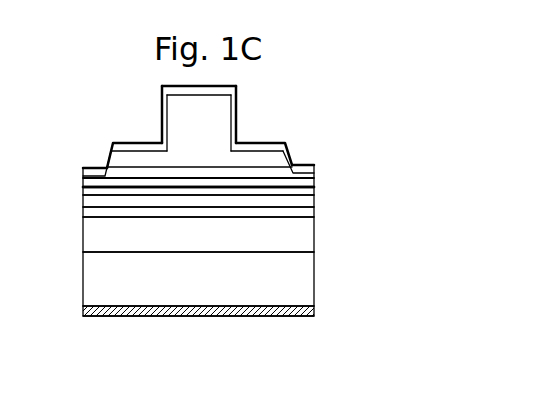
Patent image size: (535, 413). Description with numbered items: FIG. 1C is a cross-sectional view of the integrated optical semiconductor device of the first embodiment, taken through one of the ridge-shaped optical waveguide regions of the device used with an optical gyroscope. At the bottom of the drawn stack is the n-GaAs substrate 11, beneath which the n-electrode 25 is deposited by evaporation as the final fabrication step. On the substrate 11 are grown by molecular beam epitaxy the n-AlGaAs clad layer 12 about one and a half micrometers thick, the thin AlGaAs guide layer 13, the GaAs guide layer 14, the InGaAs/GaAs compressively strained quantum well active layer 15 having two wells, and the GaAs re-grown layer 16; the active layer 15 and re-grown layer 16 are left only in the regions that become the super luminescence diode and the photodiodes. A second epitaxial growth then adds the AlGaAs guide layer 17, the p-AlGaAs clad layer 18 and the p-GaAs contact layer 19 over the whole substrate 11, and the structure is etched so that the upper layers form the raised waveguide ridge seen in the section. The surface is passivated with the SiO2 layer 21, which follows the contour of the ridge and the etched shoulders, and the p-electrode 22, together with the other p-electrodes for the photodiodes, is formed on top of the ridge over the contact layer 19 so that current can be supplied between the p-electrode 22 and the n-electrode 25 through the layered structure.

The n-GaAs substrate 11 is at (305, 300).
The n-AlGaAs clad layer 12 is at (305, 250).
The AlGaAs guide layer 13 is at (320, 223).
The GaAs guide layer 14 is at (318, 210).
The compressively strained quantum well active layer 15 is at (83, 190).
The GaAs re-grown layer 16 is at (180, 182).
The AlGaAs guide layer 17 is at (308, 187).
The p-AlGaAs clad layer 18 is at (178, 140).
The p-GaAs contact layer 19 is at (162, 92).
The SiO2 layer 21 is at (286, 145).
The p-electrode 22 is at (237, 115).
The n-electrode 25 is at (85, 304).